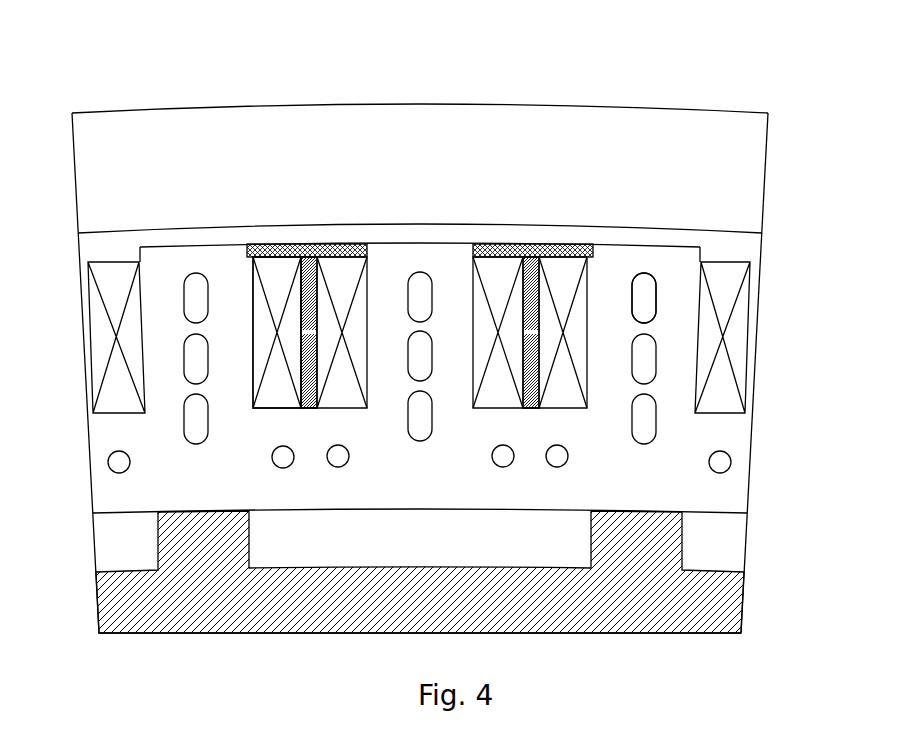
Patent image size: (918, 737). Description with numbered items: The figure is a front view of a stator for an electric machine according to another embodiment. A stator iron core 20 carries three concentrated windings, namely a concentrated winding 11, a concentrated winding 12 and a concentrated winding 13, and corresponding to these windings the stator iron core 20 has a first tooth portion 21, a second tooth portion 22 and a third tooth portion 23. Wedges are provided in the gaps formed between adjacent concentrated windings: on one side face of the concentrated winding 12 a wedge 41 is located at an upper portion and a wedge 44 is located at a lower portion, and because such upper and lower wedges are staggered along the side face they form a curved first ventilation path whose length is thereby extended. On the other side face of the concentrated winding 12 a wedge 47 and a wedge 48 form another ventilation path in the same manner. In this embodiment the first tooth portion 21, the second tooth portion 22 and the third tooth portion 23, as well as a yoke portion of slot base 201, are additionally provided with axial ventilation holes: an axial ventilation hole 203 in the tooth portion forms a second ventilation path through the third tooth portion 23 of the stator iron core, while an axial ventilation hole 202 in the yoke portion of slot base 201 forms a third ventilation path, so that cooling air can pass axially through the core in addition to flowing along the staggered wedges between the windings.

The concentrated winding 11 is at (113, 288).
The concentrated winding 12 is at (498, 272).
The concentrated winding 13 is at (732, 330).
The stator iron core 20 is at (102, 437).
The first tooth portion 21 is at (225, 268).
The second tooth portion 22 is at (442, 278).
The third tooth portion 23 is at (645, 268).
The wedge 41 is at (535, 245).
The wedge 44 is at (533, 408).
The wedge 47 is at (307, 245).
The wedge 48 is at (310, 408).
The yoke portion of slot base 201 is at (734, 490).
The axial ventilation hole 202 is at (728, 468).
The axial ventilation hole 203 is at (647, 295).